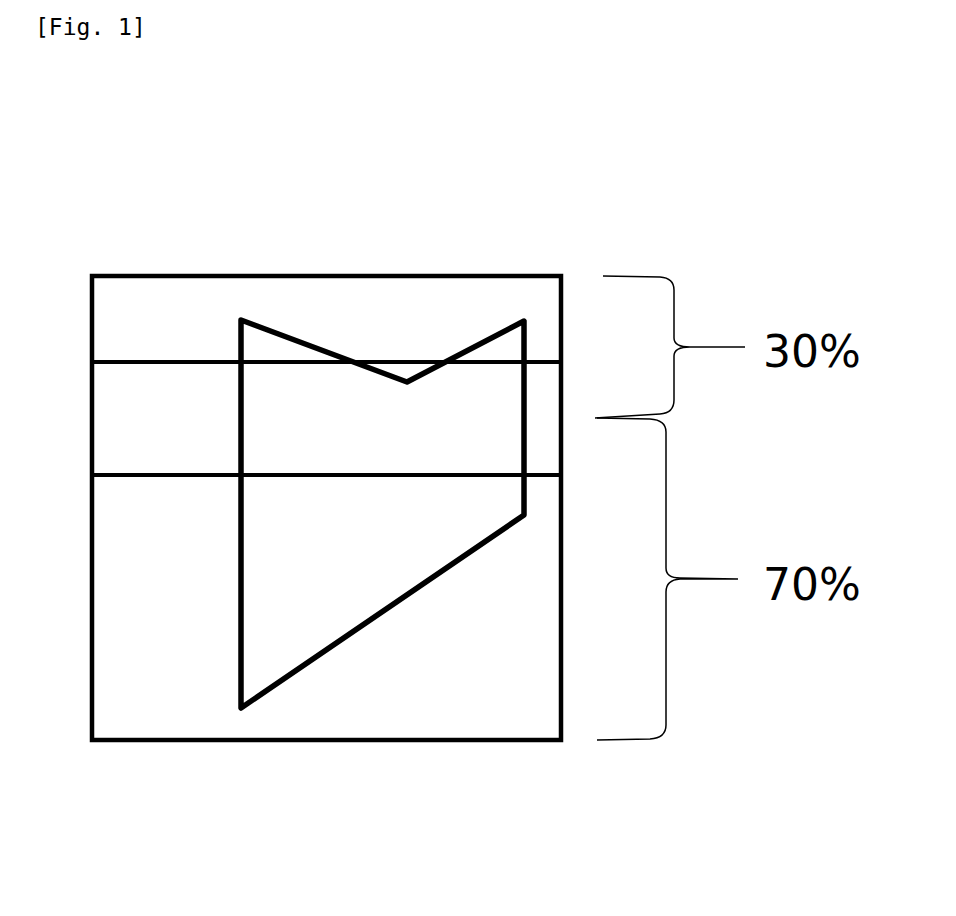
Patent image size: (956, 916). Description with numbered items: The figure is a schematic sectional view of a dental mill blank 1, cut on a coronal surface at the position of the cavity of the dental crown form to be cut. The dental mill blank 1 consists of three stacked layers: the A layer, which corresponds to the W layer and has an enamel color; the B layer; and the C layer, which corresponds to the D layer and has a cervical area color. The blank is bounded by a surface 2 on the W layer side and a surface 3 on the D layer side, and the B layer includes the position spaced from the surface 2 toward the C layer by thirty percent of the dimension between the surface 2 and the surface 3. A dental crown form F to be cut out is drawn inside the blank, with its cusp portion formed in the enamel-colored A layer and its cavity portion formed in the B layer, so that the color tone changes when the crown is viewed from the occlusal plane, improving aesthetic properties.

The dental mill blank 1 is at (675, 232).
The surface of the dental mill blank of the W layer-side 2 is at (387, 275).
The surface of the dental mill blank of the D layer-side 3 is at (255, 742).
The dental crown form F is at (478, 405).
The A layer A is at (326, 319).
The B layer B is at (327, 399).
The C layer C is at (326, 595).